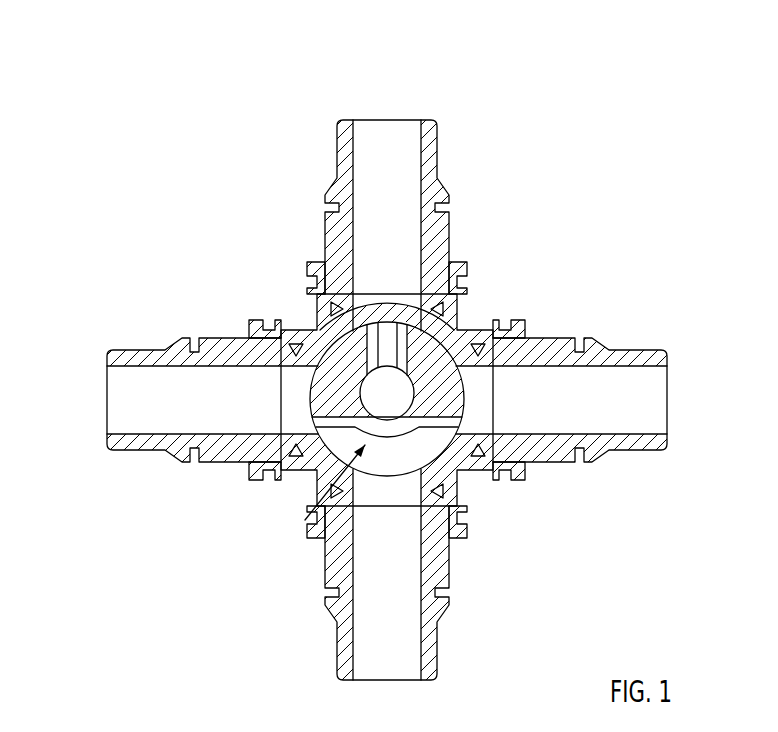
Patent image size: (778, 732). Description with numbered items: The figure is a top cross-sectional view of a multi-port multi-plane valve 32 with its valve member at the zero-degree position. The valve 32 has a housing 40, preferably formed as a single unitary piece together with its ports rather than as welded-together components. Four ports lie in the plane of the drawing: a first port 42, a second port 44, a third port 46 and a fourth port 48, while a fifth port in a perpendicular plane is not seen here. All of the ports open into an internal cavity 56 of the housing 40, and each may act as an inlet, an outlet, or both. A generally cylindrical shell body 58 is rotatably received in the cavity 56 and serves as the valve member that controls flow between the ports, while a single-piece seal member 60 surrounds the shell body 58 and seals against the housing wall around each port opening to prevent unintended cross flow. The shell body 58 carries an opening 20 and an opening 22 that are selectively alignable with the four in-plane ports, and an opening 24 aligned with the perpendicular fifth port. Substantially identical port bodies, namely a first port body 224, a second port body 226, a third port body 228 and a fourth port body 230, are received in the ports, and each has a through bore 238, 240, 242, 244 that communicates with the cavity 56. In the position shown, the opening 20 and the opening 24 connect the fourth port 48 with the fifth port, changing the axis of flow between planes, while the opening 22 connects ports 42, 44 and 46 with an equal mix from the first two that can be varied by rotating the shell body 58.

The opening 20 is at (335, 305).
The opening 22 is at (413, 445).
The opening 24 is at (383, 388).
The multi-port multi-plane valve 32 is at (389, 366).
The housing 40 is at (293, 333).
The first port 42 is at (510, 477).
The second port 44 is at (265, 480).
The third port 46 is at (467, 513).
The fourth port 48 is at (470, 282).
The internal cavity 56 is at (305, 520).
The shell body 58 is at (430, 385).
The seal member 60 is at (440, 335).
The first port body 224 is at (645, 352).
The second port body 226 is at (140, 458).
The third port body 228 is at (432, 630).
The fourth port body 230 is at (410, 155).
The through bore 238 is at (650, 400).
The through bore 240 is at (122, 404).
The through bore 242 is at (400, 672).
The through bore 244 is at (380, 137).